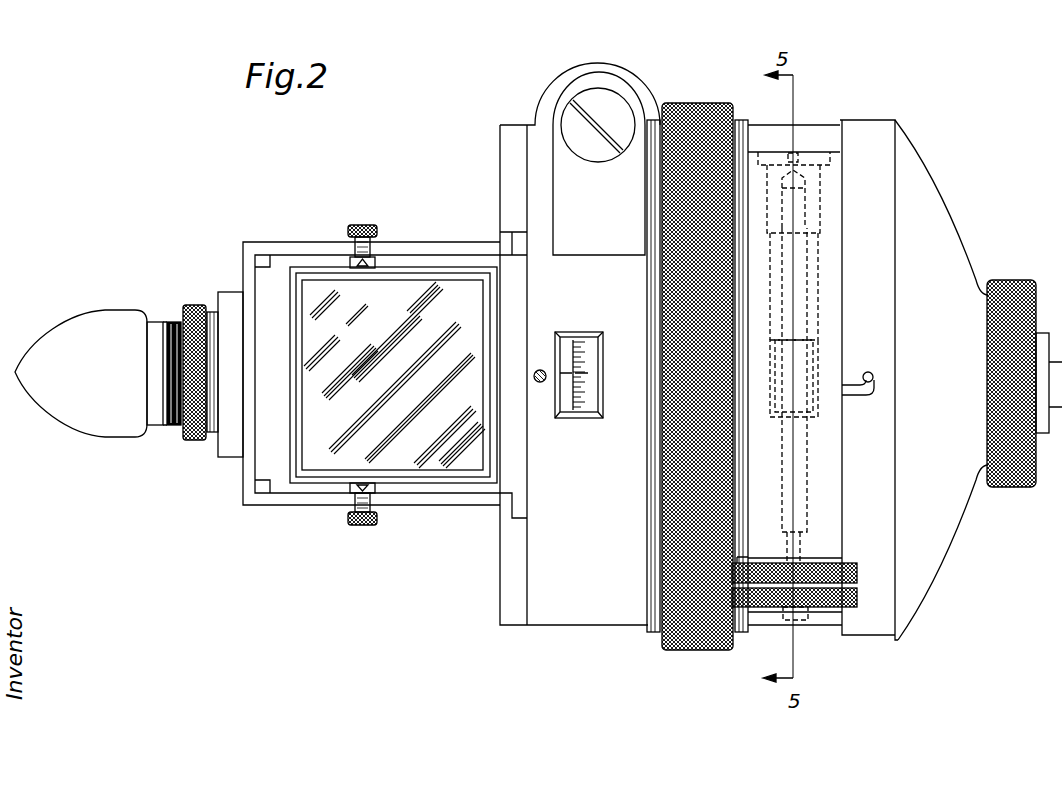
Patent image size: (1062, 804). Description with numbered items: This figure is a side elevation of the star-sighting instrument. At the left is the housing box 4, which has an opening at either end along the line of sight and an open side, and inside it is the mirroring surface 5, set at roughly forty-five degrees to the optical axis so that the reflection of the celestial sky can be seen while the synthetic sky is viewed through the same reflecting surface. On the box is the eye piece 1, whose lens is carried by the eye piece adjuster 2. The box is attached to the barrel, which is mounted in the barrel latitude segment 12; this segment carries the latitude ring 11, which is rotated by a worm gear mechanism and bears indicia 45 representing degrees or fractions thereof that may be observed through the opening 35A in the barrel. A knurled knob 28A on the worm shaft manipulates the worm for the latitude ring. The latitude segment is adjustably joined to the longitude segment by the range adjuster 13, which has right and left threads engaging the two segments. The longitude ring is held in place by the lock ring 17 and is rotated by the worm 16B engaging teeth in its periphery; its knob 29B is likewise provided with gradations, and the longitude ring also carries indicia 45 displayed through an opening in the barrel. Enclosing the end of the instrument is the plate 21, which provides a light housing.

The eye piece 1 is at (156, 428).
The eye piece adjuster 2 is at (200, 434).
The box 4 is at (310, 505).
The mirroring surface 5 is at (412, 462).
The latitude ring 11 is at (598, 384).
The barrel latitude segment 12 is at (575, 625).
The range adjuster 13 is at (690, 650).
The worm 16B is at (815, 358).
The lock ring 17 is at (820, 126).
The plate 21 is at (927, 588).
The knurled knob 28A is at (852, 565).
The knob 29B is at (857, 605).
The opening 35A is at (560, 418).
The indicia 45 is at (586, 340).